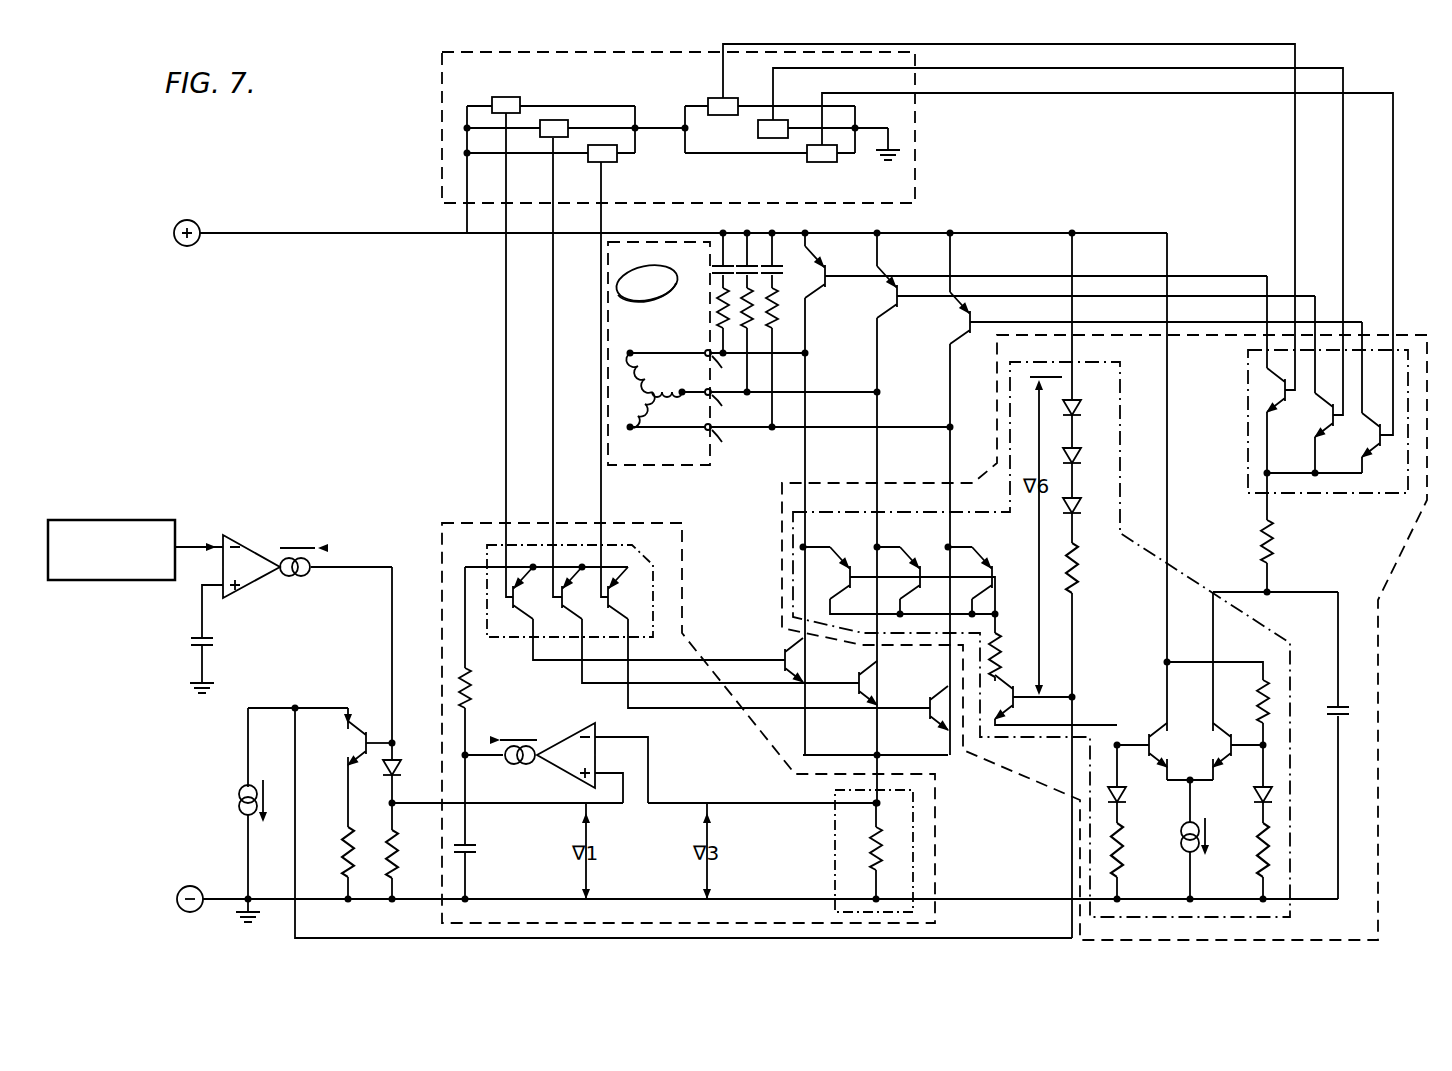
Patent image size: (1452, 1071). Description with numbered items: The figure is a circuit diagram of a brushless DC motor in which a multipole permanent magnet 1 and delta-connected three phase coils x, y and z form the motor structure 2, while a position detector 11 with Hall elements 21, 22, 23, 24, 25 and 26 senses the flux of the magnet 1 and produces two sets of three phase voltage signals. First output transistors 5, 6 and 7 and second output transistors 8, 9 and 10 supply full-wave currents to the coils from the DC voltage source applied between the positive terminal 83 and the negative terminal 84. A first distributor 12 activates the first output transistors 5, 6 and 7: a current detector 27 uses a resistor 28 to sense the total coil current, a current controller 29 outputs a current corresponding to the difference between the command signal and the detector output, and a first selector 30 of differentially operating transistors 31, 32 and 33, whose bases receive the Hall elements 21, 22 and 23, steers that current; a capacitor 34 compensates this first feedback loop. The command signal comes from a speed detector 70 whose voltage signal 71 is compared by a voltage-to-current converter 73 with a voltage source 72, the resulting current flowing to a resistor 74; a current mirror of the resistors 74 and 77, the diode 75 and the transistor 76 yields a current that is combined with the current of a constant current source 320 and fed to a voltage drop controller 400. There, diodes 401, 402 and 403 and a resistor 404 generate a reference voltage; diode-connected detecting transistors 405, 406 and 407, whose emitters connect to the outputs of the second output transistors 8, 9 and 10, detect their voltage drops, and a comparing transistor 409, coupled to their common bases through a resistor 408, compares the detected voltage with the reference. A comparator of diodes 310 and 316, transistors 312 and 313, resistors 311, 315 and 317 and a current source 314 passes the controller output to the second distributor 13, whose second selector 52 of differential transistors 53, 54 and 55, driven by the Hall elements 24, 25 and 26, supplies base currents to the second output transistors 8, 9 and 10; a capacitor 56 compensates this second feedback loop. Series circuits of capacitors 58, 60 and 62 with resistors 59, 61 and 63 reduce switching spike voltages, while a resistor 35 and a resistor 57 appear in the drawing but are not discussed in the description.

The magnet 1 is at (627, 225).
The motor structure 2 is at (688, 466).
The first output transistor 5 is at (790, 655).
The first output transistor 6 is at (864, 676).
The first output transistor 7 is at (936, 702).
The second output transistor 8 is at (815, 280).
The second output transistor 9 is at (886, 305).
The second output transistor 10 is at (960, 330).
The position detector 11 is at (918, 168).
The first distributor 12 is at (490, 522).
The second distributor 13 is at (1382, 717).
The Hall element 21 is at (508, 97).
The Hall element 22 is at (553, 120).
The Hall element 23 is at (602, 145).
The Hall element 24 is at (714, 98).
The Hall element 25 is at (767, 120).
The Hall element 26 is at (808, 161).
The current detector 27 is at (835, 852).
The resistor 28 is at (870, 846).
The current controller 29 is at (561, 742).
The first selector 30 is at (515, 640).
The transistor 31 is at (526, 615).
The transistor 32 is at (575, 615).
The transistor 33 is at (620, 615).
The capacitor 34 is at (473, 848).
The resistor 35 is at (472, 700).
The second selector 52 is at (1248, 470).
The transistor 53 is at (1280, 392).
The transistor 54 is at (1326, 416).
The transistor 55 is at (1370, 446).
The capacitor 56 is at (1350, 710).
The resistor 57 is at (1274, 546).
The capacitor 58 is at (722, 266).
The resistor 59 is at (716, 306).
The capacitor 60 is at (750, 265).
The resistor 61 is at (752, 326).
The capacitor 62 is at (774, 268).
The resistor 63 is at (779, 312).
The speed detector 70 is at (162, 520).
The voltage signal 71 is at (183, 547).
The voltage source 72 is at (206, 648).
The voltage-to-current converter 73 is at (233, 535).
The resistor 74 is at (399, 851).
The diode 75 is at (397, 762).
The transistor 76 is at (372, 731).
The resistor 77 is at (344, 856).
The positive terminal 83 is at (199, 243).
The negative terminal 84 is at (184, 890).
The diode 310 is at (1127, 795).
The resistor 311 is at (1130, 830).
The transistor 312 is at (1145, 732).
The transistor 313 is at (1225, 745).
The current source 314 is at (1180, 843).
The resistor 315 is at (1258, 700).
The diode 316 is at (1254, 795).
The resistor 317 is at (1258, 843).
The constant current source 320 is at (240, 805).
The voltage drop controller 400 is at (1117, 425).
The diode 401 is at (1077, 412).
The diode 402 is at (1077, 461).
The diode 403 is at (1077, 511).
The resistor 404 is at (1081, 578).
The detecting transistor 405 is at (836, 557).
The detecting transistor 406 is at (906, 557).
The detecting transistor 407 is at (978, 560).
The resistor 408 is at (1003, 650).
The comparing transistor 409 is at (1005, 718).